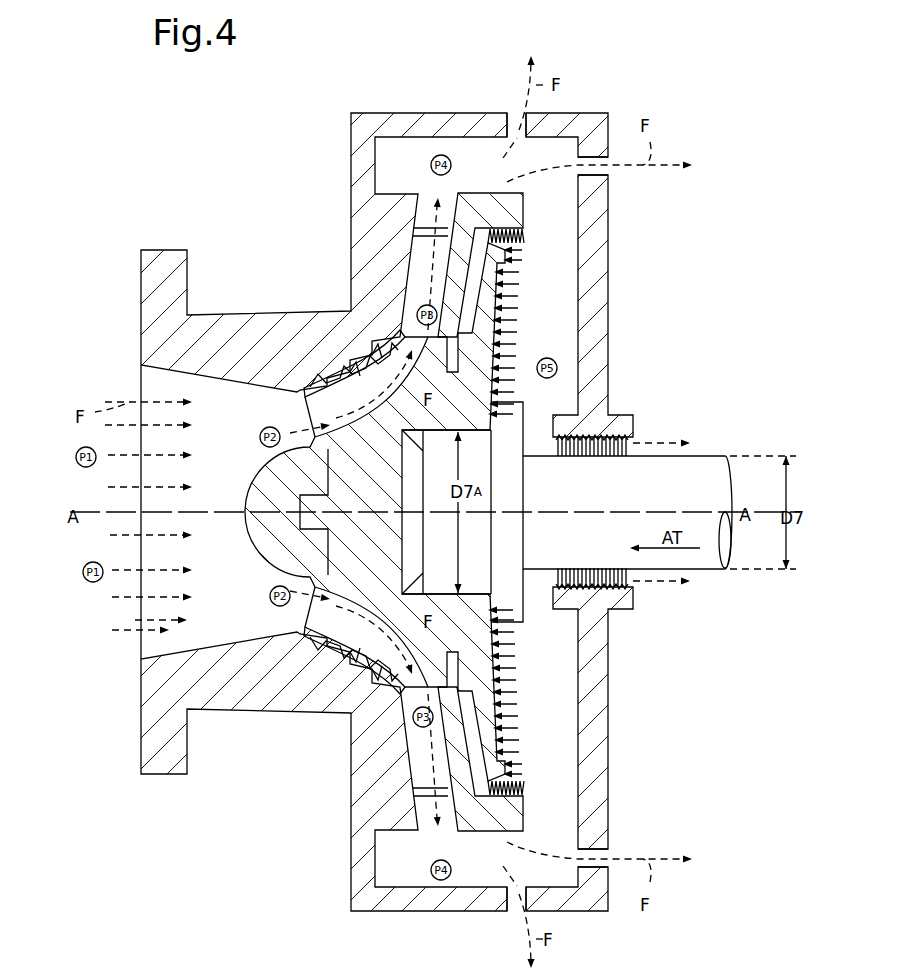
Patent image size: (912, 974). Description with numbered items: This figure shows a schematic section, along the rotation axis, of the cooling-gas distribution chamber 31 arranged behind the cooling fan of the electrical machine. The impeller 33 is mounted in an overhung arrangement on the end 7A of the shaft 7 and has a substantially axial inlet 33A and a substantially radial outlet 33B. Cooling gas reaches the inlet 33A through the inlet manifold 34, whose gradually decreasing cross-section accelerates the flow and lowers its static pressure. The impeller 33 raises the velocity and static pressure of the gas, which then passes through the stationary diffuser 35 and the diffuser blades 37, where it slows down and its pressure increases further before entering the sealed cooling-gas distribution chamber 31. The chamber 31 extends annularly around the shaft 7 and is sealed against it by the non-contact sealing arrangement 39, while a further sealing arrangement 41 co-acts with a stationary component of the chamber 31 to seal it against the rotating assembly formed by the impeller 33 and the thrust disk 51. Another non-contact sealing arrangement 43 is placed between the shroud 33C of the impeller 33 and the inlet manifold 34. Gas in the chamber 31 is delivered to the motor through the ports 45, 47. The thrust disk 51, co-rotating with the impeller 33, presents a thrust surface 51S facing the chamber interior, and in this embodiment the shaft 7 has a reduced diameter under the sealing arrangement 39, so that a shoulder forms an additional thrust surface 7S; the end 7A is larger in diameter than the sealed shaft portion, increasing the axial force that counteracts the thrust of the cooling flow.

The shaft 7 is at (711, 466).
The end of the shaft 7A is at (425, 548).
The additional thrust surface 7S is at (516, 597).
The cooling-gas distribution chamber 31 is at (542, 737).
The impeller 33 is at (348, 480).
The inlet of the impeller 33A is at (298, 414).
The outlet of the impeller 33B is at (400, 340).
The shroud of the impeller 33C is at (338, 390).
The inlet manifold 34 is at (177, 650).
The stationary diffuser 35 is at (445, 270).
The diffuser blades 37 is at (422, 233).
The sealing arrangement 39 is at (627, 437).
The sealing arrangement 41 is at (528, 237).
The non-contact sealing arrangement 43 is at (350, 365).
The port 45 is at (517, 118).
The port 47 is at (609, 172).
The thrust disk 51 is at (498, 668).
The thrust surface 51S is at (500, 325).